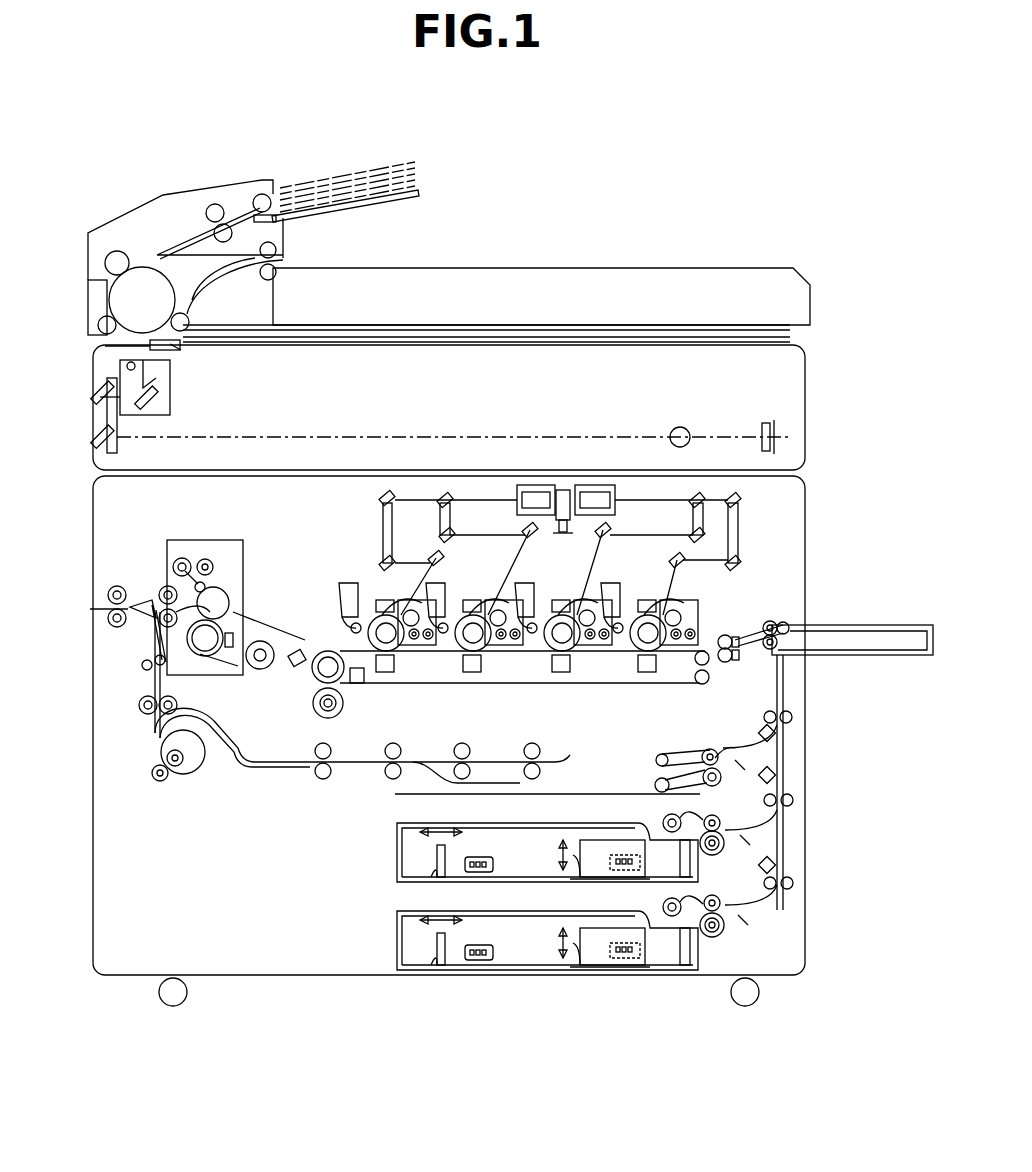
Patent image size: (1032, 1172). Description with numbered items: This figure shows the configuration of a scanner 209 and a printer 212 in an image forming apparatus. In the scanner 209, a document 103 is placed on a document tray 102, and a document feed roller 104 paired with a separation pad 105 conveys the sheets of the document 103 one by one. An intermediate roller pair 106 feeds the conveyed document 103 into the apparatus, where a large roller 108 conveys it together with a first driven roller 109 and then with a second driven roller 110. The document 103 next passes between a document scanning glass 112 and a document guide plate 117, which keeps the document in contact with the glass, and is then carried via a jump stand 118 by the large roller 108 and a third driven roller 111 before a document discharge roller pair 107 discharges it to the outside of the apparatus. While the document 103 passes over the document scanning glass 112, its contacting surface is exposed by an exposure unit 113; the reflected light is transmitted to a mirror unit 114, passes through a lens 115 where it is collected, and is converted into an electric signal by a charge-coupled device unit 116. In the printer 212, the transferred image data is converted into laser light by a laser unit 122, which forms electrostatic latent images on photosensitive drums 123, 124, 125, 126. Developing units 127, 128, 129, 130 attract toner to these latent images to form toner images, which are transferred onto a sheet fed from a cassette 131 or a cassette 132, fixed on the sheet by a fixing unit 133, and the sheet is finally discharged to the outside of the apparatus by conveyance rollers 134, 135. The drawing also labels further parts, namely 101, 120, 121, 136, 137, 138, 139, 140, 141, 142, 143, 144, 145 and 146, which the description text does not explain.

The pressure plate 101 is at (755, 285).
The document tray 102 is at (420, 195).
The document 103 is at (395, 170).
The document feed roller 104 is at (262, 194).
The separation pad 105 is at (283, 235).
The intermediate roller pair 106 is at (213, 204).
The document discharge roller pair 107 is at (285, 262).
The large roller 108 is at (90, 290).
The first driven roller 109 is at (117, 250).
The second driven roller 110 is at (98, 323).
The third driven roller 111 is at (190, 320).
The document scanning glass 112 is at (100, 355).
The exposure unit 113 is at (172, 405).
The mirror unit 114 is at (92, 440).
The lens 115 is at (680, 426).
The charge-coupled device (CCD) unit 116 is at (762, 425).
The document guide plate 117 is at (185, 345).
The jump stand 118 is at (178, 352).
The image reading unit 120 is at (808, 348).
The platen glass 121 is at (663, 338).
The laser unit 122 is at (600, 487).
The photosensitive drum 123 is at (648, 655).
The photosensitive drum 124 is at (562, 655).
The photosensitive drum 125 is at (473, 655).
The photosensitive drum 126 is at (386, 655).
The developing unit 127 is at (685, 645).
The developing unit 128 is at (598, 645).
The developing unit 129 is at (510, 645).
The developing unit 130 is at (420, 645).
The cassette 131 is at (397, 855).
The cassette 132 is at (397, 944).
The fixing unit 133 is at (205, 540).
The conveyance roller 134 is at (160, 595).
The conveyance roller 135 is at (108, 615).
The flapper 136 is at (150, 625).
The duplex conveyance path 137 is at (150, 705).
The manual feed tray 138 is at (875, 655).
The side regulating plate 139 is at (435, 860).
The trailing edge regulating plate 140 is at (595, 848).
The sensor 141 is at (478, 872).
The pickup roller 142 is at (662, 760).
The side regulating plate 143 is at (438, 945).
The trailing edge regulating plate 144 is at (598, 950).
The sensor 145 is at (478, 960).
The sensor 146 is at (627, 957).
The scanner 209 is at (808, 418).
The printer 212 is at (808, 560).